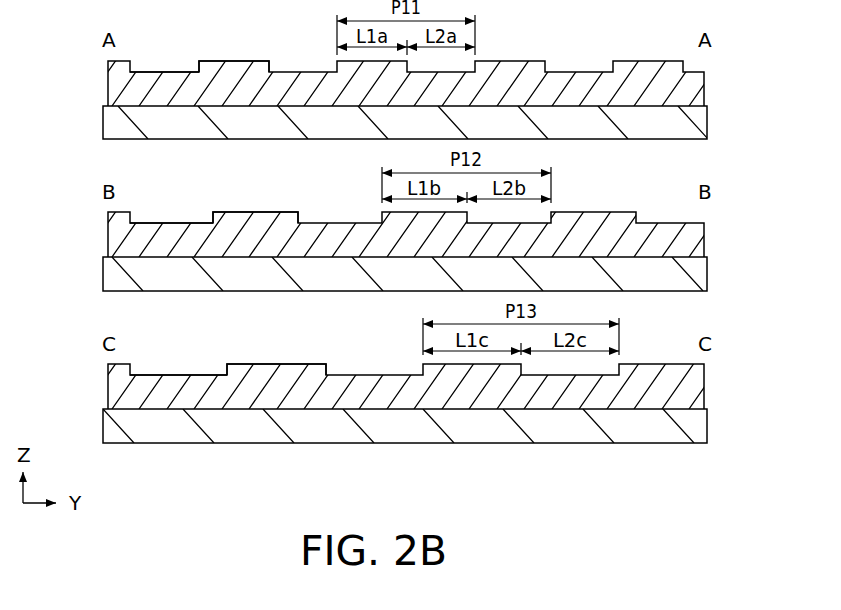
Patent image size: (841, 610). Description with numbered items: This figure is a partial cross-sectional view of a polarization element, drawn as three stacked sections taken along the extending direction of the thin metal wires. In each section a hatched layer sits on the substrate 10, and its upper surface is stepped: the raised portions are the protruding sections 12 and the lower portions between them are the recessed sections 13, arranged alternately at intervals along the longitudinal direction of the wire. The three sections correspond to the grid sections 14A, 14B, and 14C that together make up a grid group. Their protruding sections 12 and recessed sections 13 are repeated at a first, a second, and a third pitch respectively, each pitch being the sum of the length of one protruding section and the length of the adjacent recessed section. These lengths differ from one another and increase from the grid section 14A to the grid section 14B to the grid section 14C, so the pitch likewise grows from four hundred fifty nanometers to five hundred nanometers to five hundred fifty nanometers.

The substrate 10 is at (704, 123).
The protruding section 12 is at (237, 61).
The recessed section 13 is at (169, 72).
The grid section 14A is at (112, 83).
The grid section 14B is at (112, 236).
The grid section 14C is at (112, 388).